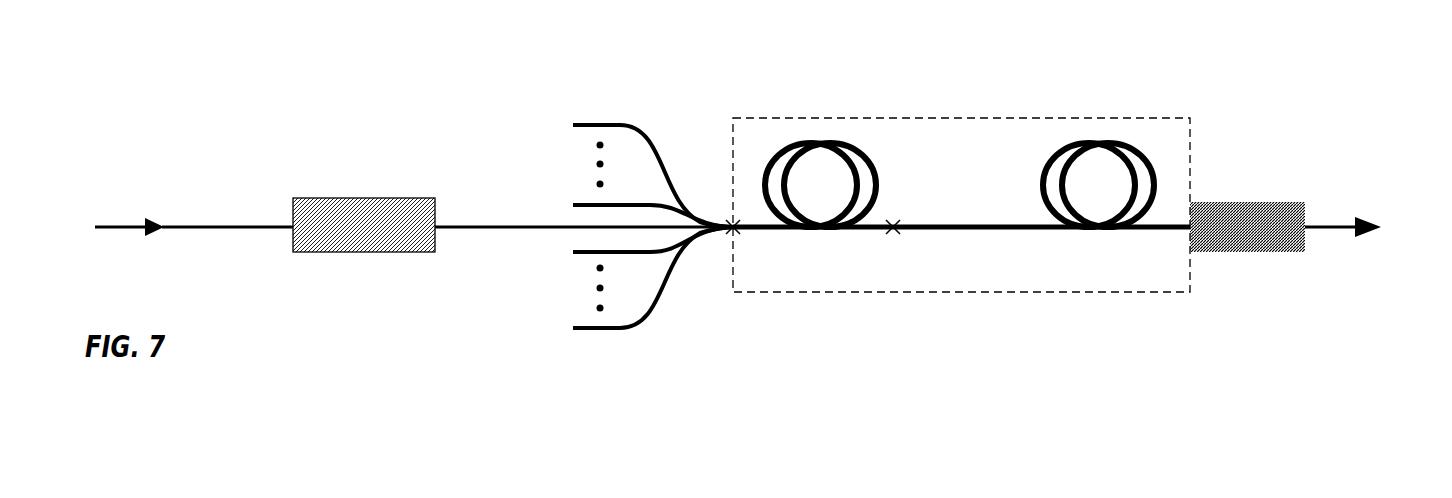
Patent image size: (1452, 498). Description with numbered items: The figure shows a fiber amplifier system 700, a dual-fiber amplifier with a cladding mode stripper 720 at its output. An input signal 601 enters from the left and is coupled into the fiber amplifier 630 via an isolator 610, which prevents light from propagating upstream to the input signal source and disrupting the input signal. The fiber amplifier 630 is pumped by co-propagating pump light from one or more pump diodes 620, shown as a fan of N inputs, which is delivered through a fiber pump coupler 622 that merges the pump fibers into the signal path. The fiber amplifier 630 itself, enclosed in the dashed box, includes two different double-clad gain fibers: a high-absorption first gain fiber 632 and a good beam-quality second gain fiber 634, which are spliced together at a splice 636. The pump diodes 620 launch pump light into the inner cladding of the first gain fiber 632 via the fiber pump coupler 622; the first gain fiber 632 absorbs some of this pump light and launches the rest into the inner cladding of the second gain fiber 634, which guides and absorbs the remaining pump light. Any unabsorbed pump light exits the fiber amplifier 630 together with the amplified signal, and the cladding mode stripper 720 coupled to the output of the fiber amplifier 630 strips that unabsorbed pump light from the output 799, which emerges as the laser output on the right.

The fiber amplifier system 700 is at (300, 78).
The input signal 601 is at (179, 208).
The isolator 610 is at (364, 243).
The pump diodes 620 is at (572, 322).
The fiber pump coupler 622 is at (606, 257).
The fiber amplifier 630 is at (802, 305).
The first gain fiber 632 is at (827, 138).
The second gain fiber 634 is at (1092, 130).
The splice 636 is at (925, 248).
The cladding mode stripper 720 is at (1284, 261).
The output 799 is at (1324, 201).